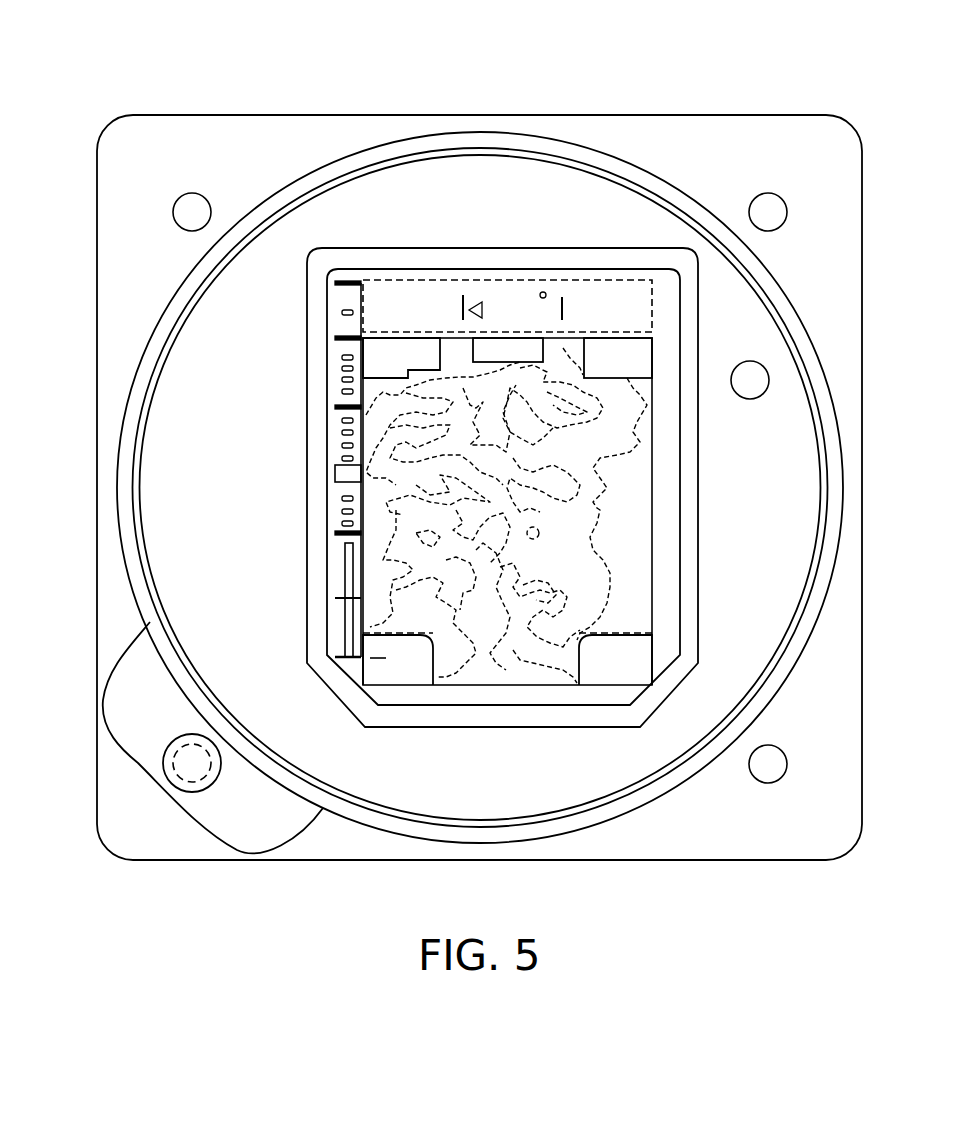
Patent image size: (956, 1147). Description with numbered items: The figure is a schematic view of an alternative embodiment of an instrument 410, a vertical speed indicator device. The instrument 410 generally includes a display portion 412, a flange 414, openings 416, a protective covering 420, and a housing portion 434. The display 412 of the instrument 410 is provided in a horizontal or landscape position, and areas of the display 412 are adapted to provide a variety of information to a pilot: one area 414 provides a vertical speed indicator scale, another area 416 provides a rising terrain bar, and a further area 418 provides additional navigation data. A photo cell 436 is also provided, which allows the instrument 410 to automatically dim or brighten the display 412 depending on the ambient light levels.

The instrument 410 is at (723, 93).
The display portion 412 is at (612, 505).
The flange 414 is at (623, 553).
The openings 416 is at (118, 528).
The area providing additional navigation data 418 is at (569, 131).
The protective covering 420 is at (178, 375).
The housing portion 434 is at (757, 270).
The photo cell 436 is at (163, 763).